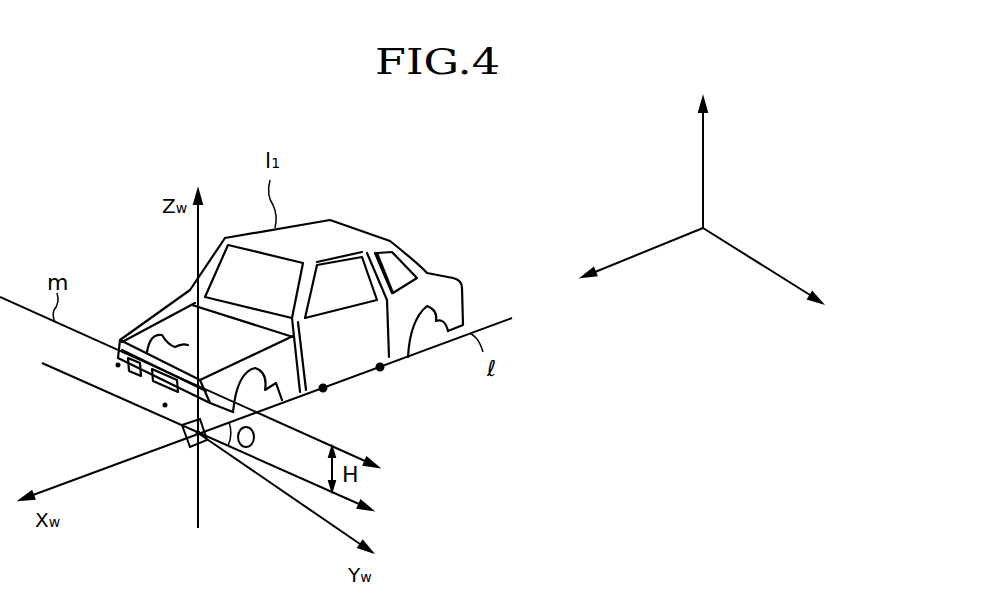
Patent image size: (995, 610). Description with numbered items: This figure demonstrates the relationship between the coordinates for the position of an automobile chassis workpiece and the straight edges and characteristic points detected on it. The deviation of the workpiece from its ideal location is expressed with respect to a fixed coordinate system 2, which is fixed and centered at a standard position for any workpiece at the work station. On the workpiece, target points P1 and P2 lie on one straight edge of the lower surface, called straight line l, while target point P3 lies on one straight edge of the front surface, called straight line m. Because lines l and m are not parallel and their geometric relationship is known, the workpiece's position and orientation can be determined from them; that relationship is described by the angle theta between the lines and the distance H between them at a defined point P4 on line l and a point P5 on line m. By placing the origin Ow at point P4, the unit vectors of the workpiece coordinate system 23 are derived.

The fixed coordinate system 2 is at (657, 243).
The workpiece coordinate system 23 is at (305, 510).
The target point P1 is at (330, 401).
The target point P2 is at (388, 382).
The target point P3 is at (117, 365).
The defined point on line l P4 is at (188, 443).
The defined point on line m P5 is at (165, 405).